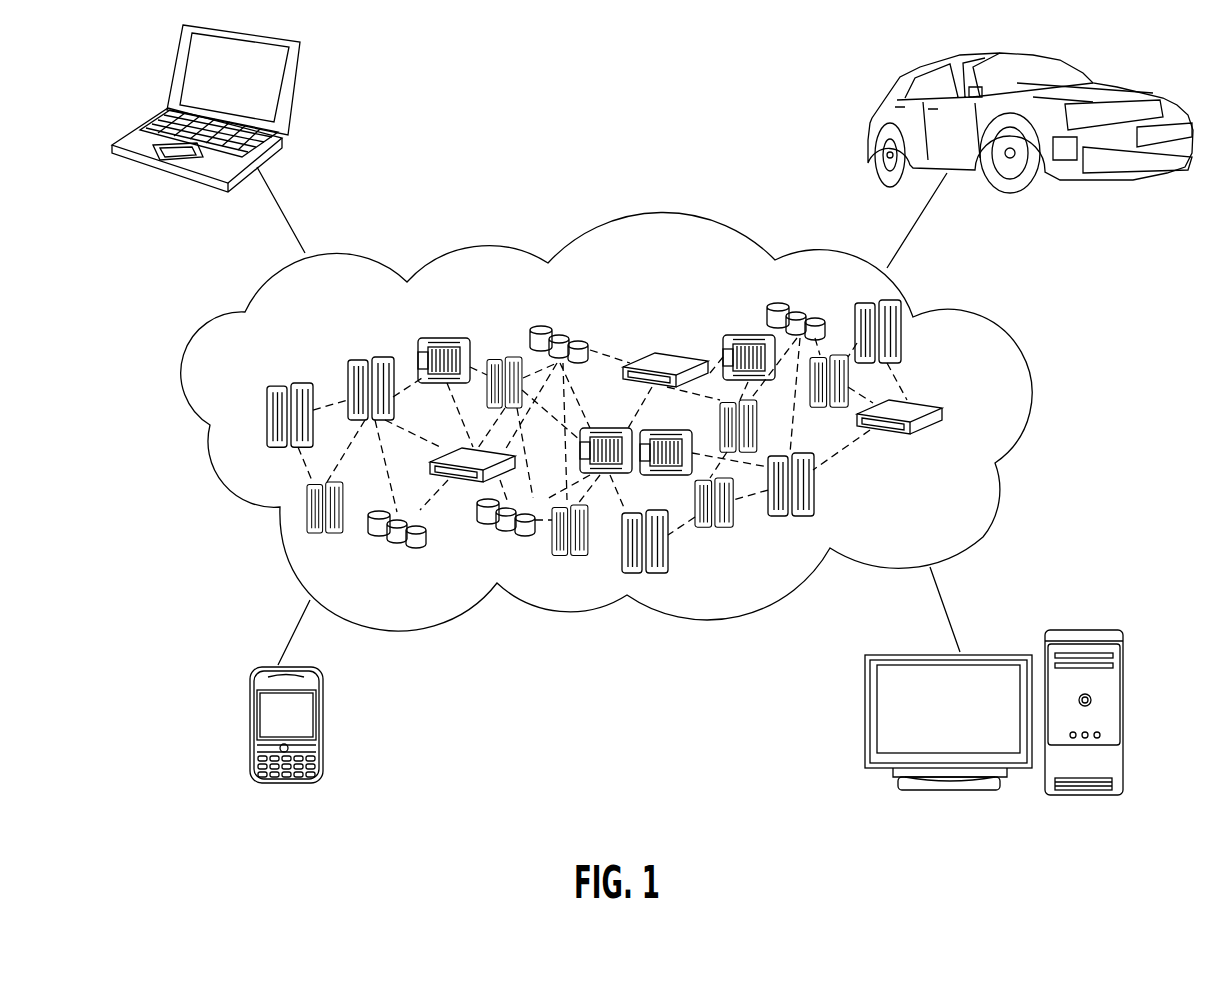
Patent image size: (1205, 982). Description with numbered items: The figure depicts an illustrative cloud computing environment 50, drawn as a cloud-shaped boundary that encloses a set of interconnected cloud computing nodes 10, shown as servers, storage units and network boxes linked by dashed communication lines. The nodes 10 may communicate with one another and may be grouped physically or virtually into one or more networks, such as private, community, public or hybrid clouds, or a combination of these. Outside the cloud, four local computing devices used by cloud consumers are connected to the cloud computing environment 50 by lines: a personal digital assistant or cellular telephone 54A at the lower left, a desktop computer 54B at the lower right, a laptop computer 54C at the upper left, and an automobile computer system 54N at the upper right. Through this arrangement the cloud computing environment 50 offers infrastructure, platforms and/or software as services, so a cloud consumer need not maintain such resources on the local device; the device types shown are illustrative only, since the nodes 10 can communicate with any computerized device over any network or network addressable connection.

The cloud computing nodes 10 is at (980, 413).
The cloud computing environment 50 is at (1007, 325).
The personal digital assistant or cellular telephone 54A is at (250, 728).
The desktop computer 54B is at (1088, 628).
The laptop computer 54C is at (293, 90).
The automobile computer system 54N is at (877, 103).